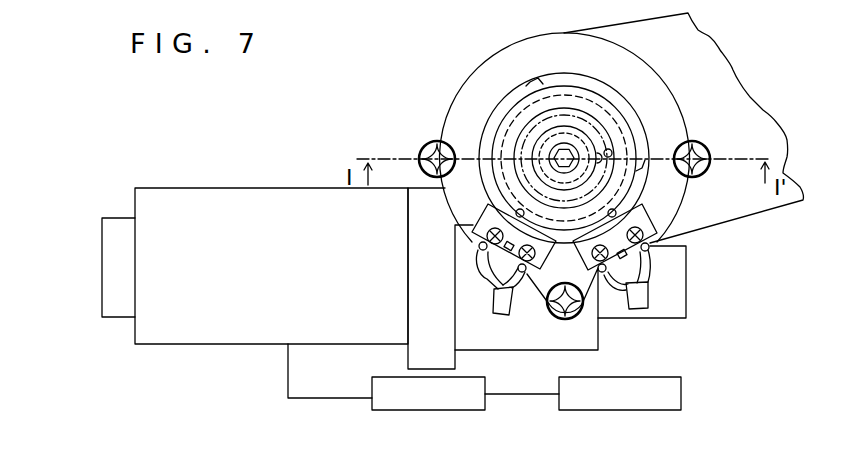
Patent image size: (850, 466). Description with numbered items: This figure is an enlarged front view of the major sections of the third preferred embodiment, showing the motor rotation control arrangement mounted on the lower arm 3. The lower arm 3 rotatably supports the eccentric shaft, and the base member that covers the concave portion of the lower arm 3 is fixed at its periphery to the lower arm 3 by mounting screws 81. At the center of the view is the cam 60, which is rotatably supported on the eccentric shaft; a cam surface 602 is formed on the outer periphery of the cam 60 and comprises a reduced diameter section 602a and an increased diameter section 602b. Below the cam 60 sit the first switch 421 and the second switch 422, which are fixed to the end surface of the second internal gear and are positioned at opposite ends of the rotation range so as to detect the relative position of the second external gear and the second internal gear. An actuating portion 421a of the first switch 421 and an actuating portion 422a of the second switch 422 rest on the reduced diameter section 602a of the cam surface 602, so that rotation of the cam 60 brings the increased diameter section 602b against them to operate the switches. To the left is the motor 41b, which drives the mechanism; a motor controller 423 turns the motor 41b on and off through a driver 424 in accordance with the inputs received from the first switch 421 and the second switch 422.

The lower arm 3 is at (727, 97).
The mounting screws 81 is at (702, 144).
The increased diameter section 602b is at (545, 76).
The reduced diameter section 602a is at (503, 131).
The cam surface 602 is at (490, 192).
The cam 60 is at (505, 175).
The motor 41b is at (224, 208).
The second switch 422 is at (473, 228).
The actuating portion of the second switch 422a is at (543, 285).
The first switch 421 is at (640, 199).
The actuating portion of the first switch 421a is at (651, 223).
The driver 424 is at (428, 393).
The motor controller 423 is at (620, 393).